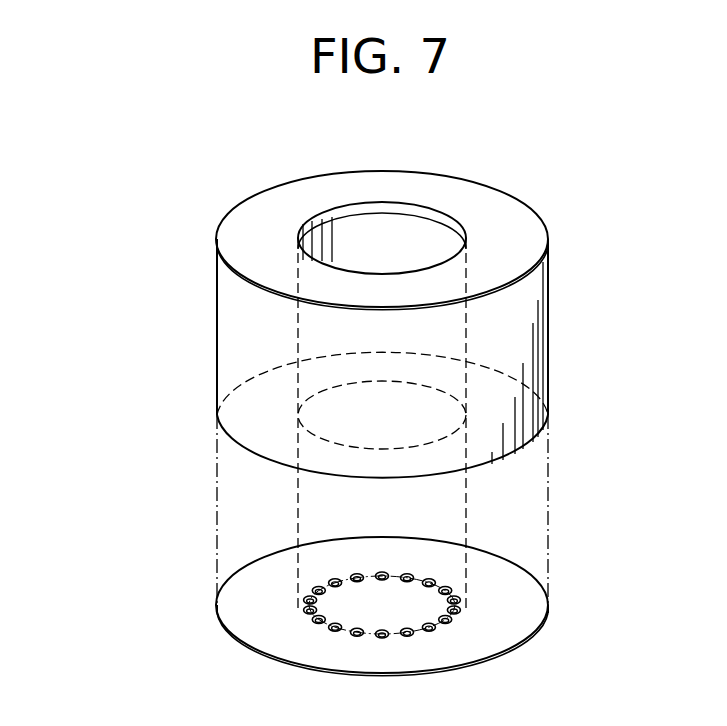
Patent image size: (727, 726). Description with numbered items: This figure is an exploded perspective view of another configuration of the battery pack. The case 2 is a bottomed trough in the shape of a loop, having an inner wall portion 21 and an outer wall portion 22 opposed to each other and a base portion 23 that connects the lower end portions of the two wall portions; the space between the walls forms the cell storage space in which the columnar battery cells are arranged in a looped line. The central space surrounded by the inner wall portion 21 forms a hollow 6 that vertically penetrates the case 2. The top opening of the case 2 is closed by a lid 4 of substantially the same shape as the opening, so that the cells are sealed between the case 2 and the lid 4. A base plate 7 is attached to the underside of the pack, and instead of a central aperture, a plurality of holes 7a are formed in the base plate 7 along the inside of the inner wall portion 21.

The case 2 is at (314, 362).
The inner wall portion 21 is at (268, 372).
The outer wall portion 22 is at (226, 326).
The base portion 23 is at (252, 408).
The lid 4 is at (515, 215).
The hollow 6 is at (423, 230).
The base plate 7 is at (508, 582).
The holes 7a is at (370, 573).